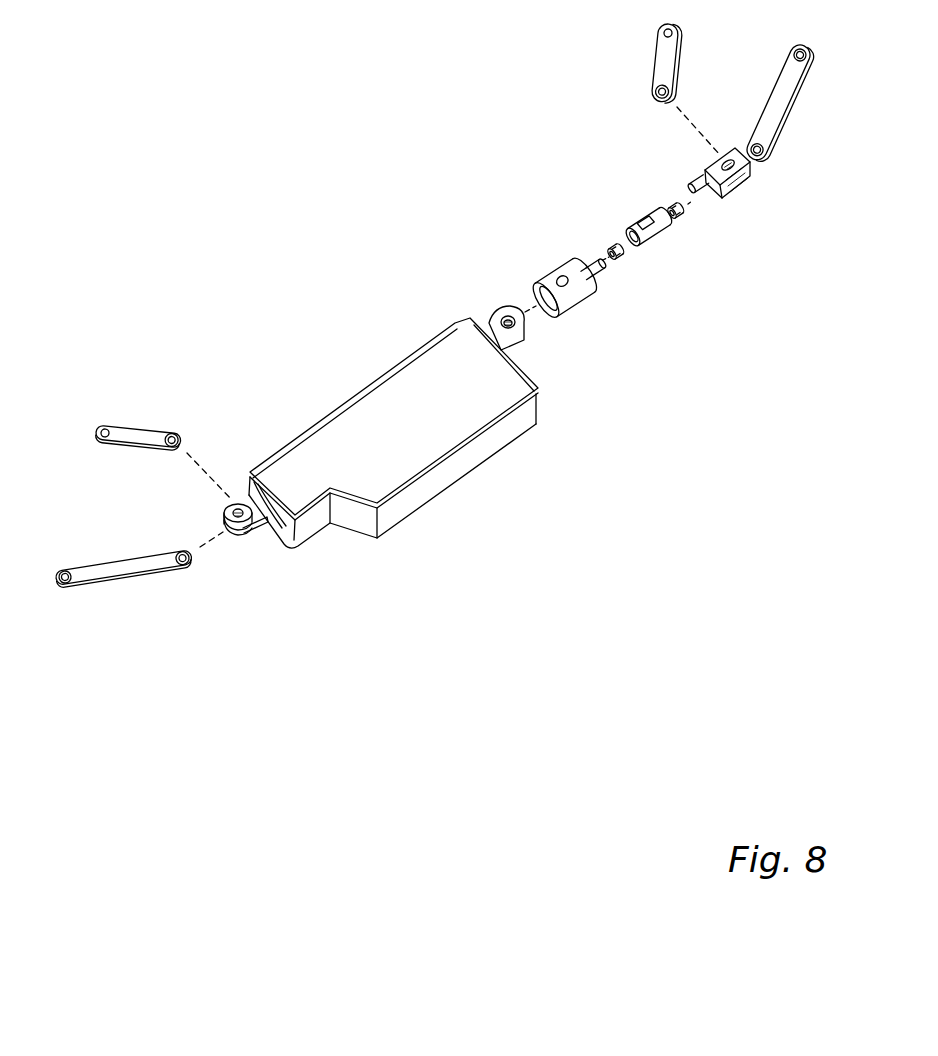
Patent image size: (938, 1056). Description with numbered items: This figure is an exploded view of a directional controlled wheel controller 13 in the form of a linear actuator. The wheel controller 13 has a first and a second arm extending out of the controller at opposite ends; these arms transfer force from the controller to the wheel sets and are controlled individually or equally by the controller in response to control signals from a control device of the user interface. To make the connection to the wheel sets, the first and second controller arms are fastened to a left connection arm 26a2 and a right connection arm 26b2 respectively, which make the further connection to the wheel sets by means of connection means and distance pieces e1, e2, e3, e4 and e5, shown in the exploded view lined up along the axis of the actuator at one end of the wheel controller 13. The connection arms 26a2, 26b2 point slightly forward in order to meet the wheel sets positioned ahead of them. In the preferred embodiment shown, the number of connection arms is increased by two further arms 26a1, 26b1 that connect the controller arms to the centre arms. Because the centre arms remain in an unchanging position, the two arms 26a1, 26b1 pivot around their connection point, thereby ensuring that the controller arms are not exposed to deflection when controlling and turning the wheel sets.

The wheel controller 13 is at (522, 442).
The connection means and distance piece e1 is at (585, 308).
The connection means and distance piece e2 is at (627, 259).
The connection means and distance piece e3 is at (663, 244).
The connection means and distance piece e4 is at (689, 219).
The connection means and distance piece e5 is at (734, 189).
The connection arm 26a1 is at (652, 55).
The left connection arm 26a2 is at (796, 98).
The connection arm 26b1 is at (128, 423).
The right connection arm 26b2 is at (118, 589).